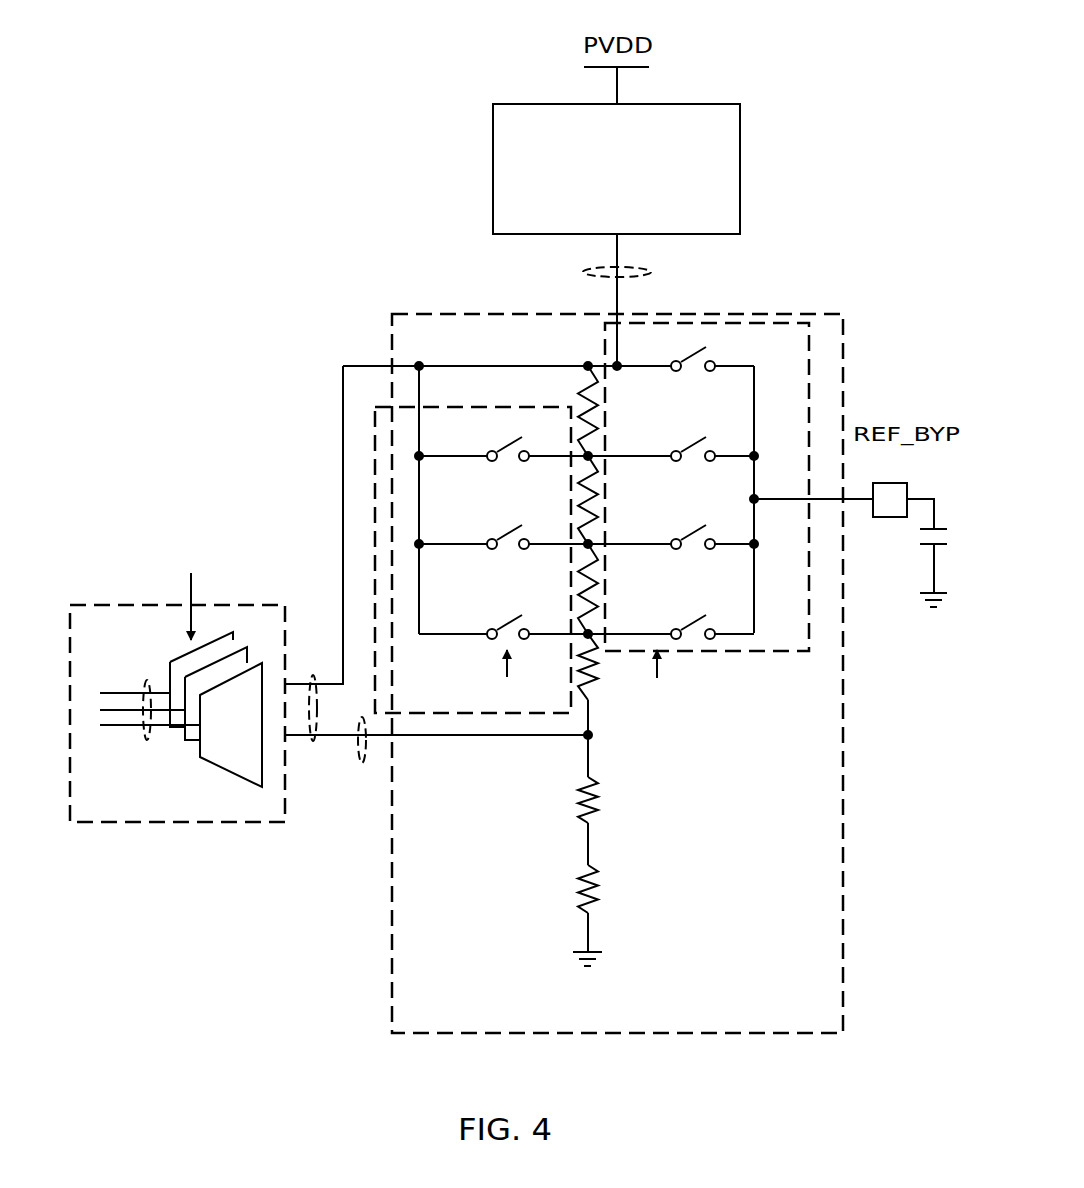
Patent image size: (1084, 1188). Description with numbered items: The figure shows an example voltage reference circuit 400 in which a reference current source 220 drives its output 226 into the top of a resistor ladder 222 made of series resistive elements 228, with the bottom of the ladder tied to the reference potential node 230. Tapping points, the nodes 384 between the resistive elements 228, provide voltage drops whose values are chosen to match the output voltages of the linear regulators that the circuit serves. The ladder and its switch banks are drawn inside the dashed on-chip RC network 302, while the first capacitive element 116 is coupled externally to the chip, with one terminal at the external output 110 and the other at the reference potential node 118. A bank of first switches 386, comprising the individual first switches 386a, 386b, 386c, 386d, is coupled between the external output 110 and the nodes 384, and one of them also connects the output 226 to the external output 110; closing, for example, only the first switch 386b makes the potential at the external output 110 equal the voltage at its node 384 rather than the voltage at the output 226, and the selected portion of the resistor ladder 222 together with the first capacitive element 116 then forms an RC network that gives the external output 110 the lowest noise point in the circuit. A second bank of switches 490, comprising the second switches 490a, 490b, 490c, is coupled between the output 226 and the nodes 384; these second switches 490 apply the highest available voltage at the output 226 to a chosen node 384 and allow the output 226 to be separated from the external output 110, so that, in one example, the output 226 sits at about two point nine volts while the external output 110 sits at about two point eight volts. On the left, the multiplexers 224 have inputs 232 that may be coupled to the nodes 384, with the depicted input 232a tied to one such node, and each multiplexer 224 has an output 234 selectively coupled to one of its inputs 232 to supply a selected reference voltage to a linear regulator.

The voltage reference circuit 400 is at (150, 70).
The reference current source 220 is at (535, 104).
The output of the reference current source 226 is at (640, 276).
The on-chip RC network 302 is at (430, 313).
The second switches 490 is at (507, 406).
The second switch 490a is at (499, 444).
The second switch 490b is at (499, 532).
The second switch 490c is at (501, 620).
The nodes 384 is at (583, 550).
The first switches 386 is at (775, 652).
The first switch 386a is at (704, 318).
The first switch 386b is at (688, 440).
The first switch 386c is at (688, 530).
The first switch 386d is at (688, 618).
The external output 110 is at (888, 483).
The first capacitive element 116 is at (924, 548).
The reference potential node 118 is at (933, 608).
The resistive elements 228 is at (590, 777).
The resistor ladder 222 is at (635, 854).
The reference potential node 230 is at (586, 950).
The multiplexers 224 is at (107, 605).
The output of the multiplexer 234 is at (147, 682).
The inputs of the multiplexers 232 is at (315, 745).
The input of the multiplexers 232a is at (368, 760).